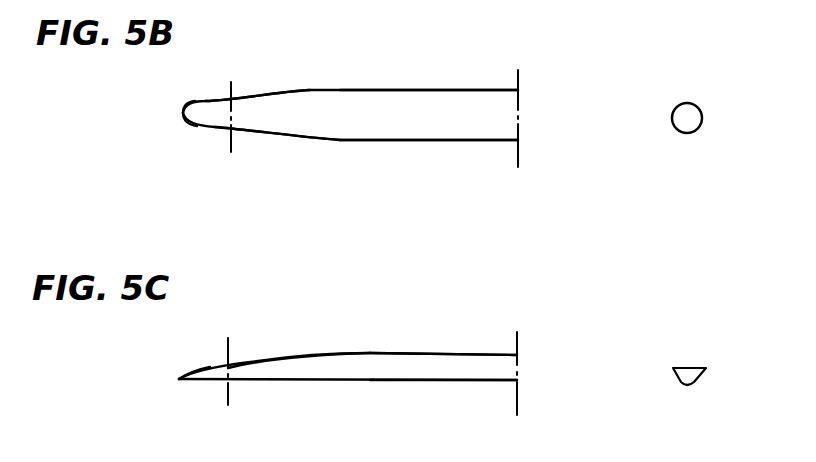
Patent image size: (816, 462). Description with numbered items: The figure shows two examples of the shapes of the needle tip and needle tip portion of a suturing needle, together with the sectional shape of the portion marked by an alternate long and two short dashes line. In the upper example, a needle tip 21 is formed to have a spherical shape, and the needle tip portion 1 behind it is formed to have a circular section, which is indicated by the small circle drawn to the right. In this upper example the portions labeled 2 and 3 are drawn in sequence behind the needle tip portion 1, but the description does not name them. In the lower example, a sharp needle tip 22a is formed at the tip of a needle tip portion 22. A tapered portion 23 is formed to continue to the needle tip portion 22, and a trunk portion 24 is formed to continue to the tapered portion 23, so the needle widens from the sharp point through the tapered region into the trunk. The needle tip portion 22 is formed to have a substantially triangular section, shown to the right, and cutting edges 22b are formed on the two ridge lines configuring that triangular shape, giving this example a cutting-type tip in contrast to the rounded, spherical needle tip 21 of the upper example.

In FIG. 5B, the needle tip portion 1 is at (212, 100).
In FIG. 5B, the curved tapered portion 2 is at (256, 96).
In FIG. 5B, the straight portion 3 is at (393, 88).
In FIG. 5B, the needle tip 21 is at (185, 117).
In FIG. 5C, the needle tip portion 22 is at (203, 364).
In FIG. 5C, the tapered portion 23 is at (257, 353).
In FIG. 5C, the trunk portion 24 is at (392, 350).
In FIG. 5C, the needle tip 22a is at (181, 382).
In FIG. 5C, the cutting edges 22b is at (675, 367).